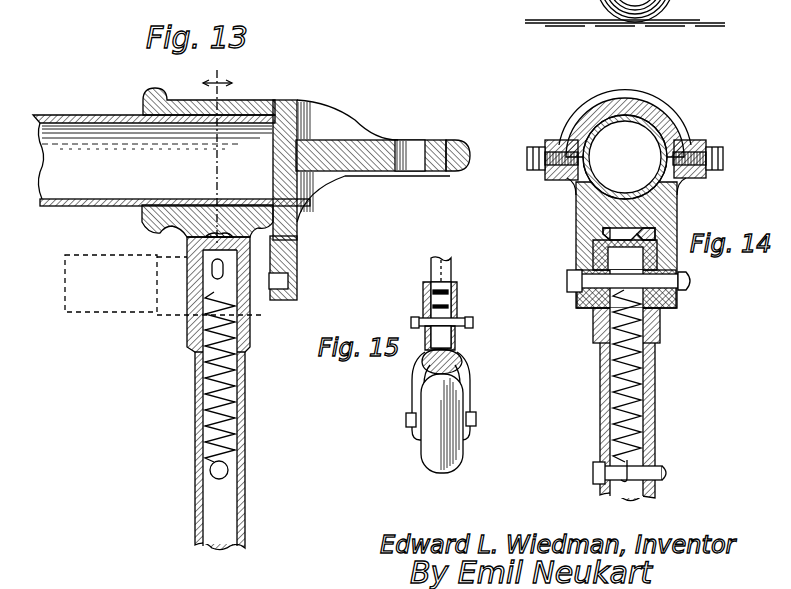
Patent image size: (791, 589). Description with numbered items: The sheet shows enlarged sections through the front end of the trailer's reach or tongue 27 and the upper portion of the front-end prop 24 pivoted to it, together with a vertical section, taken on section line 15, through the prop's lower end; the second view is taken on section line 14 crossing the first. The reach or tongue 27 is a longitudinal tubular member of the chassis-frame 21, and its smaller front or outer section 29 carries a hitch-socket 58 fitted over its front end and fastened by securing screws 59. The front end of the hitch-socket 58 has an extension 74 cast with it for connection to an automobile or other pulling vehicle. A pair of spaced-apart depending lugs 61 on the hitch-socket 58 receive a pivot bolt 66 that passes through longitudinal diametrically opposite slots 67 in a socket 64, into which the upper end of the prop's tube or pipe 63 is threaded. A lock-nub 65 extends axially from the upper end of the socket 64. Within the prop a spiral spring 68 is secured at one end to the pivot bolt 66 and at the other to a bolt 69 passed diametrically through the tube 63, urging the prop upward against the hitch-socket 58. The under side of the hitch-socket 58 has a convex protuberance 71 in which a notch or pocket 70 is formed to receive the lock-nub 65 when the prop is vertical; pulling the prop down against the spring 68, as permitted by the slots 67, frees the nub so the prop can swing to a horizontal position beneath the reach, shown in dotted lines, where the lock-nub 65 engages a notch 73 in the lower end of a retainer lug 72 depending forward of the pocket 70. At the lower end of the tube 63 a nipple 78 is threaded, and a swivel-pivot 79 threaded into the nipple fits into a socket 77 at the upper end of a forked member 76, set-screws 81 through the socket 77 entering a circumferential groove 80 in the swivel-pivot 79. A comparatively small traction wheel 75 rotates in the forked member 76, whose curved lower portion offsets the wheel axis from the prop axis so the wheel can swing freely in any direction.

In FIG. 13, the section line 14 is at (230, 70).
In FIG. 14, the section line 15 is at (625, 13).
In FIG. 13, the chassis-frame 21 is at (84, 209).
In FIG. 14, the chassis-frame 21 is at (604, 188).
In FIG. 13, the front-end prop 24 is at (250, 348).
In FIG. 14, the front-end prop 24 is at (652, 374).
In FIG. 13, the reach or tongue 27 is at (86, 120).
In FIG. 14, the reach or tongue 27 is at (650, 117).
In FIG. 13, the front or outer section of the reach or tongue 29 is at (62, 170).
In FIG. 13, the hitch-socket 58 is at (244, 104).
In FIG. 14, the hitch-socket 58 is at (608, 104).
In FIG. 14, the securing screws 59 is at (534, 170).
In FIG. 13, the depending lugs 61 is at (187, 279).
In FIG. 14, the depending lugs 61 is at (590, 246).
In FIG. 13, the tube or pipe 63 is at (96, 312).
In FIG. 15, the tube or pipe 63 is at (451, 262).
In FIG. 14, the tube or pipe 63 is at (600, 427).
In FIG. 13, the socket 64 is at (192, 330).
In FIG. 14, the socket 64 is at (660, 323).
In FIG. 13, the lock-nub 65 is at (218, 234).
In FIG. 14, the lock-nub 65 is at (668, 228).
In FIG. 13, the pivot bolt 66 is at (226, 286).
In FIG. 14, the pivot bolt 66 is at (696, 283).
In FIG. 13, the longitudinal slots 67 is at (210, 264).
In FIG. 14, the longitudinal slots 67 is at (672, 302).
In FIG. 13, the spiral spring 68 is at (232, 405).
In FIG. 14, the spiral spring 68 is at (614, 378).
In FIG. 13, the bolt 69 is at (229, 473).
In FIG. 14, the bolt 69 is at (612, 472).
In FIG. 13, the notch or pocket 70 is at (188, 205).
In FIG. 14, the notch or pocket 70 is at (600, 221).
In FIG. 13, the convex protuberance 71 is at (285, 242).
In FIG. 14, the convex protuberance 71 is at (582, 266).
In FIG. 13, the retainer lug 72 is at (288, 262).
In FIG. 13, the notch 73 is at (290, 276).
In FIG. 13, the extension 74 is at (402, 146).
In FIG. 15, the traction wheel 75 is at (447, 390).
In FIG. 15, the forked member 76 is at (413, 382).
In FIG. 15, the socket 77 is at (458, 340).
In FIG. 15, the nipple 78 is at (424, 292).
In FIG. 15, the swivel-pivot 79 is at (428, 352).
In FIG. 15, the circumferential groove 80 is at (455, 310).
In FIG. 15, the set-screws 81 is at (412, 321).